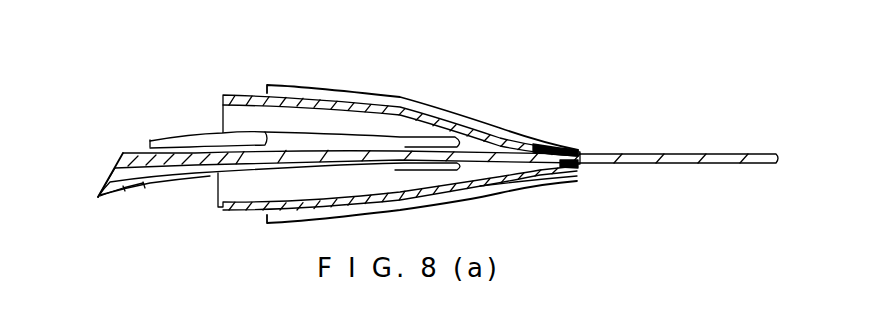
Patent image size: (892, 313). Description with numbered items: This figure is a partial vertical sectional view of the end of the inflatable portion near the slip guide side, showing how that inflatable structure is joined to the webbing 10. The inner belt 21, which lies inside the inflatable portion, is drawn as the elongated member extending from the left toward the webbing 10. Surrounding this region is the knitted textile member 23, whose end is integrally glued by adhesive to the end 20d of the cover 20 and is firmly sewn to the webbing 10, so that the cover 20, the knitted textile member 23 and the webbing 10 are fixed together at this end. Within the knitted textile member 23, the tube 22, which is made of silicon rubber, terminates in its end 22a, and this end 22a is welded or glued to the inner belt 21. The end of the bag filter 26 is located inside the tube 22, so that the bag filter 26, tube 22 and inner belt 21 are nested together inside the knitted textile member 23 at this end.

The webbing 10 is at (702, 153).
The cover 20 is at (523, 132).
The end of the cover 20d is at (582, 141).
The inner belt 21 is at (125, 188).
The tube 22 is at (205, 134).
The end of the tube 22a is at (440, 135).
The knitted textile member 23 is at (240, 94).
The bag filter 26 is at (125, 153).